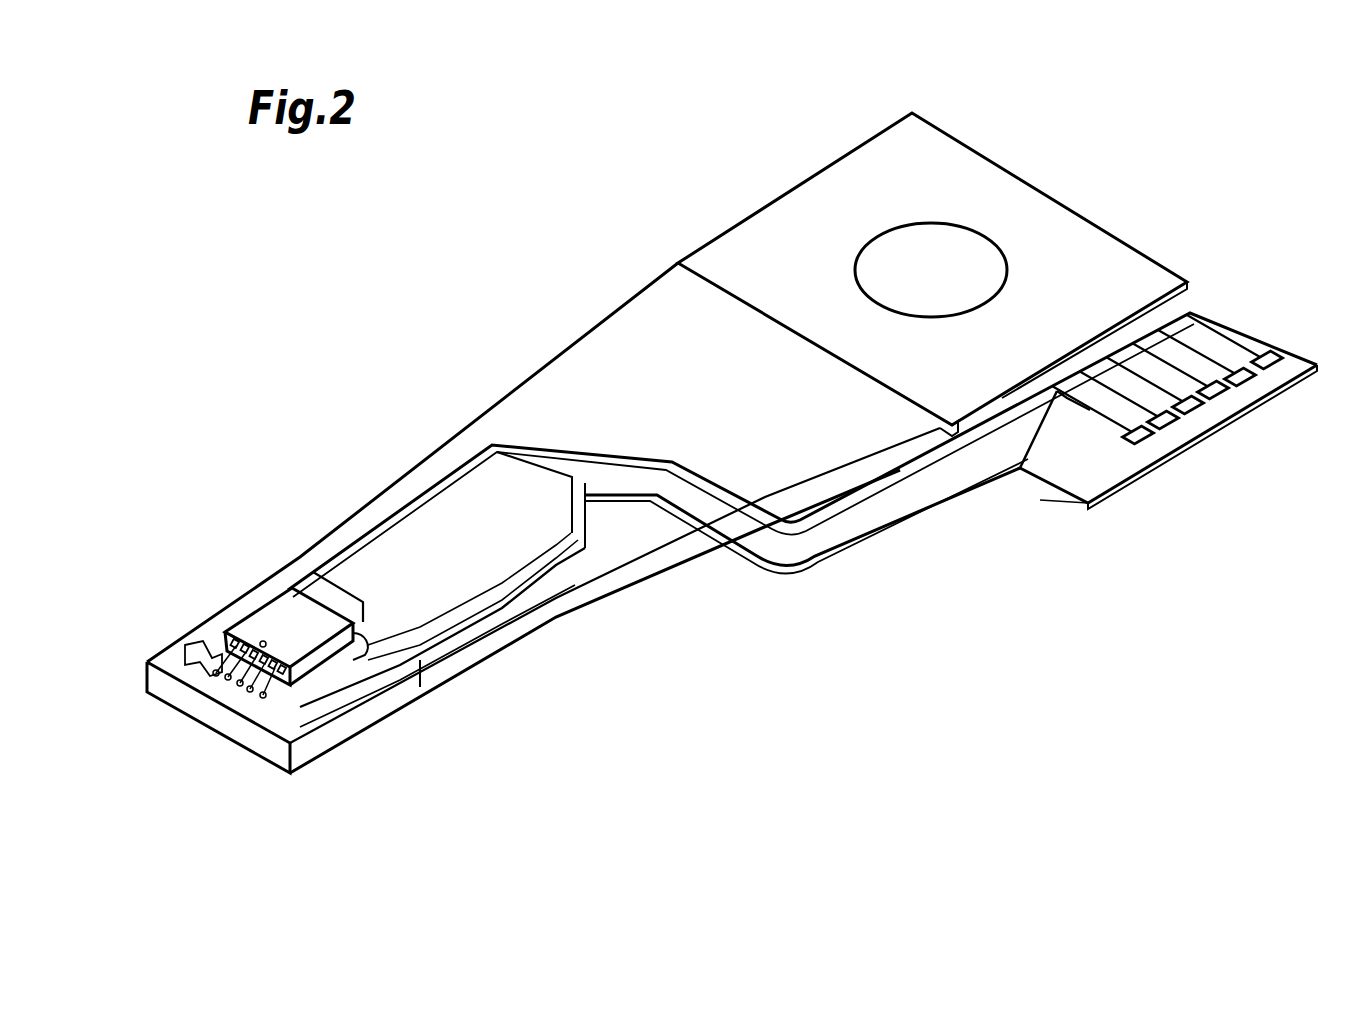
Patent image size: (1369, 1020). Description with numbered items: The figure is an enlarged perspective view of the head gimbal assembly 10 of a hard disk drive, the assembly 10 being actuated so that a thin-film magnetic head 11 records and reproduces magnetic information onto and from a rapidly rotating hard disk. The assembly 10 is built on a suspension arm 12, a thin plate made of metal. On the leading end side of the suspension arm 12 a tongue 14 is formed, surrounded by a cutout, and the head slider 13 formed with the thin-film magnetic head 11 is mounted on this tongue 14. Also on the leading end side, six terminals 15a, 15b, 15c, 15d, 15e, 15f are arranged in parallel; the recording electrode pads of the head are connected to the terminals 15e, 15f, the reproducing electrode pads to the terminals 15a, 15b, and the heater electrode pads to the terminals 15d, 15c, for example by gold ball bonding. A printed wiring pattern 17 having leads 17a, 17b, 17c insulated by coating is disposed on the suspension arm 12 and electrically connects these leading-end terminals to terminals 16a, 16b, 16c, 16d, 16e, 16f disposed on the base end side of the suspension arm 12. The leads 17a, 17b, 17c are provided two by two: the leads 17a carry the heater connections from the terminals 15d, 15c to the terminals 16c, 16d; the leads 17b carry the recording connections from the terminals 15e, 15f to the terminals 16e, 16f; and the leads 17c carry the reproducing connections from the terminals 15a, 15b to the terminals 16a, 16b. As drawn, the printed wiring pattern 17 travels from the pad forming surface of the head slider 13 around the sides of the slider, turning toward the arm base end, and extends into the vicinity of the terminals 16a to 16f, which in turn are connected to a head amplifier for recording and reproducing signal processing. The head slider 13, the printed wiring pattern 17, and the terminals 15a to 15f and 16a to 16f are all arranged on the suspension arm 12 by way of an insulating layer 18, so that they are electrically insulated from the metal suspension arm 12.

The head gimbal assembly 10 is at (538, 265).
The thin-film magnetic head 11 is at (263, 642).
The suspension arm 12 is at (580, 600).
The head slider 13 is at (302, 617).
The tongue 14 is at (347, 650).
The terminal 15a is at (236, 686).
The terminal 15b is at (247, 693).
The terminal 15c is at (261, 699).
The terminal 15d is at (200, 661).
The terminal 15e is at (212, 675).
The terminal 15f is at (224, 680).
The terminal 16a is at (1145, 447).
The terminal 16b is at (1170, 432).
The terminal 16c is at (1194, 417).
The terminal 16d is at (1219, 402).
The terminal 16e is at (1246, 388).
The terminal 16f is at (1273, 370).
The printed wiring pattern 17 is at (615, 449).
The lead 17a is at (1178, 350).
The lead 17b is at (1222, 348).
The lead 17c is at (1112, 405).
The insulating layer 18 is at (1040, 500).